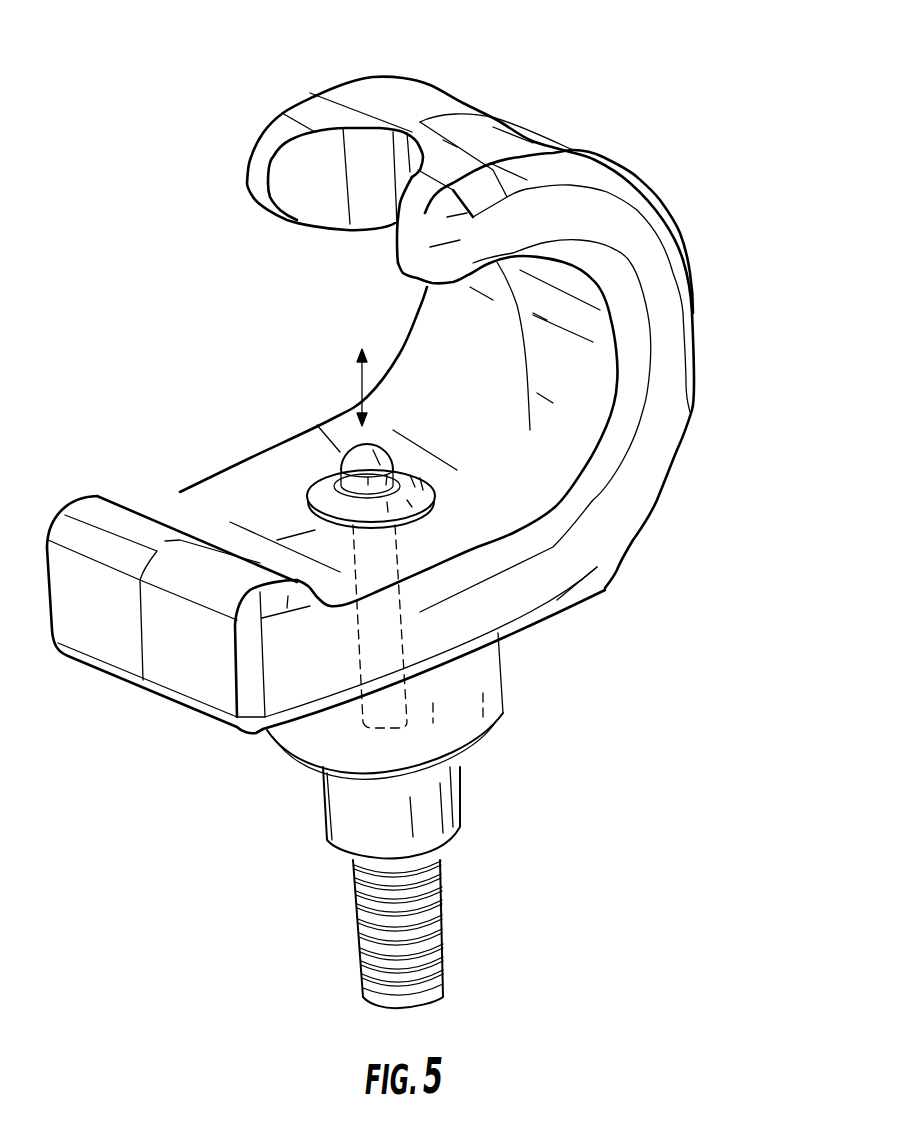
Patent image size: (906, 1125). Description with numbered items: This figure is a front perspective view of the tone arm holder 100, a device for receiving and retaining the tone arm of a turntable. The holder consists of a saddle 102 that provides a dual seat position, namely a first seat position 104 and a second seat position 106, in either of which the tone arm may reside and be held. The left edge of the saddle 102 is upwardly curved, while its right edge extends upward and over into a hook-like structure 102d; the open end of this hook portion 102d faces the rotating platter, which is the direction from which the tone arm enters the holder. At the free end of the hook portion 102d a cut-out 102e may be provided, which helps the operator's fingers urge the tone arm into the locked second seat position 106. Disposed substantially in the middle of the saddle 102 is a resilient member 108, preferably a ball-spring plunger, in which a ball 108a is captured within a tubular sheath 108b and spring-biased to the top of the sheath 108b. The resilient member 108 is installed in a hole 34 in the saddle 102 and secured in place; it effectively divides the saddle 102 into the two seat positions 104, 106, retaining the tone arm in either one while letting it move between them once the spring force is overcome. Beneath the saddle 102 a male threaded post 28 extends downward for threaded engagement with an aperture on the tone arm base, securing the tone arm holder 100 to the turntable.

The tone arm holder 100 is at (410, 504).
The saddle 102 is at (456, 306).
The hook-like structure 102d is at (535, 212).
The cut-out 102e is at (370, 173).
The first seat position 104 is at (260, 515).
The second seat position 106 is at (458, 369).
The resilient member 108 is at (540, 495).
The ball 108a is at (388, 445).
The tubular sheath 108b is at (437, 480).
The hole 34 is at (410, 693).
The male threaded post 28 is at (447, 925).